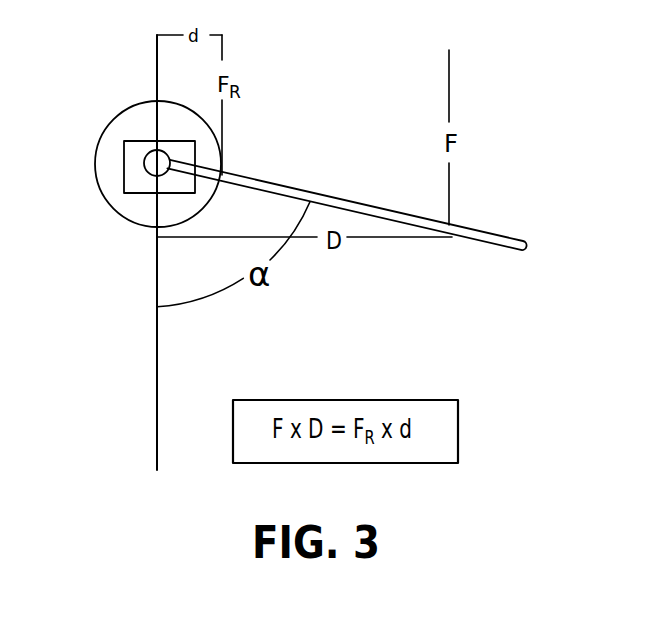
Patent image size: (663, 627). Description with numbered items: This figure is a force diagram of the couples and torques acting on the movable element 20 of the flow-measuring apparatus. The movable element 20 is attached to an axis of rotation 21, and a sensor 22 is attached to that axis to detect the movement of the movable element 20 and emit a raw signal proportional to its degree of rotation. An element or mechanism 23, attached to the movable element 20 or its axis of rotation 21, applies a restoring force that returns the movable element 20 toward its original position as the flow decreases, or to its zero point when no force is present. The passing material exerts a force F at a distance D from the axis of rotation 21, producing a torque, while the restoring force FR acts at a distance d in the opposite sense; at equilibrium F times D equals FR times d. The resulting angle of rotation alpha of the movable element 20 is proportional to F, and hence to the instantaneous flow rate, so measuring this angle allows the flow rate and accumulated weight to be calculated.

The movable element 20 is at (519, 238).
The axis of rotation 21 is at (150, 162).
The sensor 22 is at (107, 124).
The restoring element or mechanism 23 is at (124, 185).